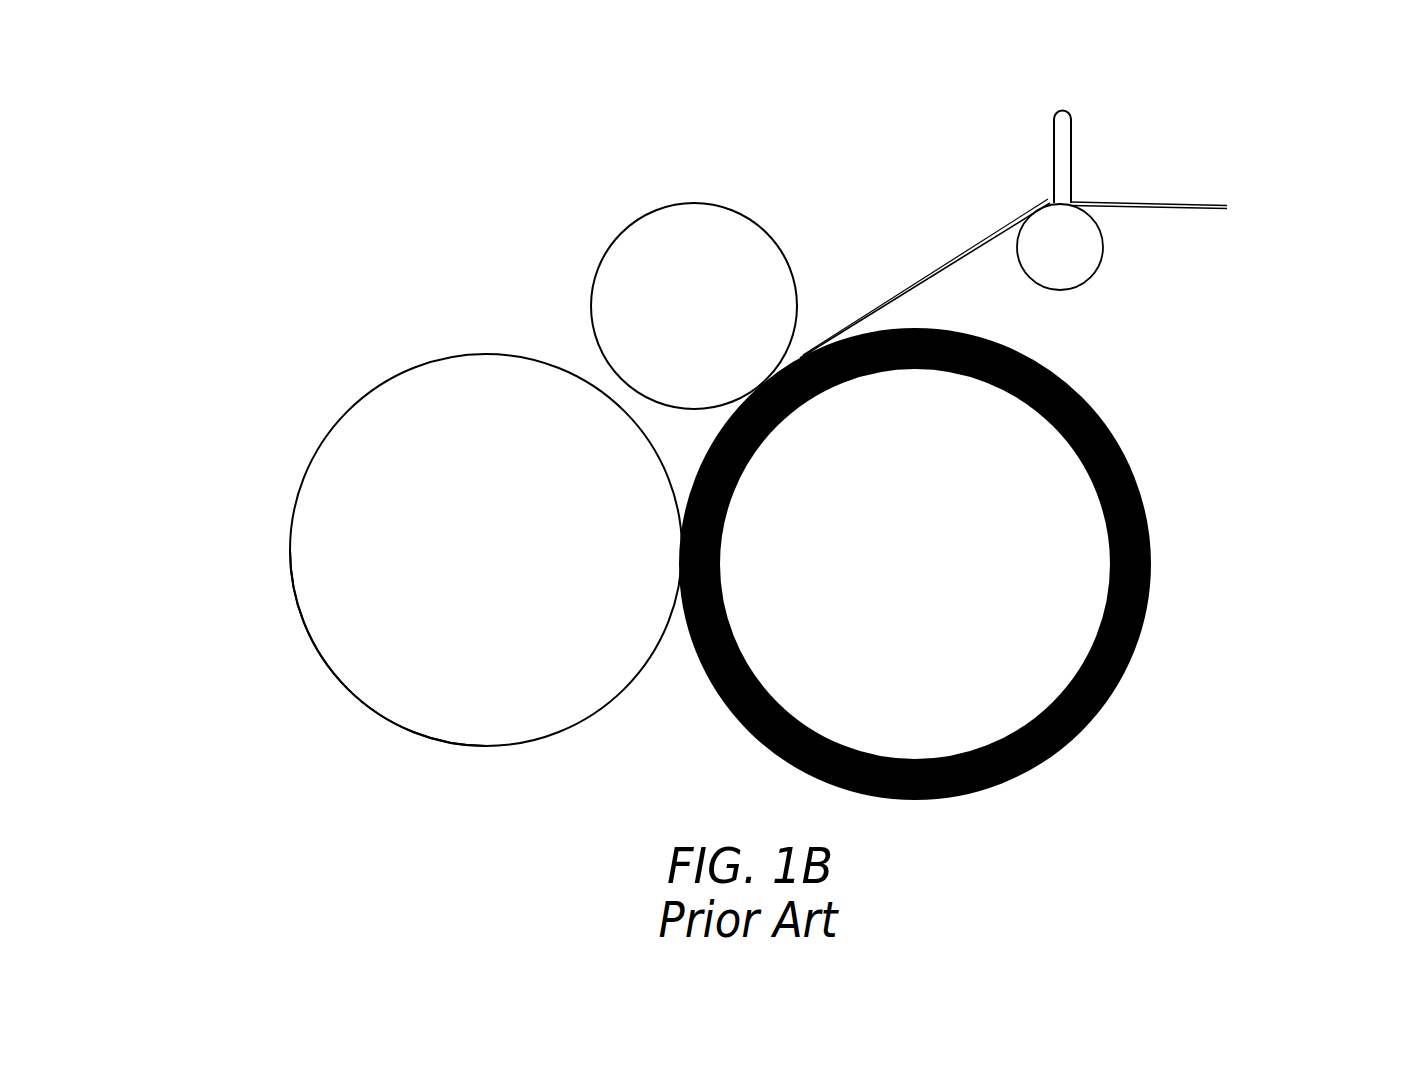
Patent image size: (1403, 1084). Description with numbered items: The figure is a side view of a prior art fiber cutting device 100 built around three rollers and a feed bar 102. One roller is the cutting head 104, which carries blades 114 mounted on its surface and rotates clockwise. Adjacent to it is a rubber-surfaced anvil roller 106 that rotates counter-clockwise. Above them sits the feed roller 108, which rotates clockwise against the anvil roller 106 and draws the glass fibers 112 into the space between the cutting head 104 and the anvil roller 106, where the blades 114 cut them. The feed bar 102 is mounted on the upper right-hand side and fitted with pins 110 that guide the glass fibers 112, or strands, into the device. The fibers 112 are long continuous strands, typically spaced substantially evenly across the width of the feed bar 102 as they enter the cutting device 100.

The fiber cutting device 100 is at (1263, 127).
The feed bar 102 is at (1080, 263).
The cutting head 104 is at (508, 718).
The anvil roller 106 is at (1057, 752).
The feed roller 108 is at (673, 260).
The pins 110 is at (1063, 147).
The glass fibers 112 is at (972, 252).
The blades 114 is at (355, 702).